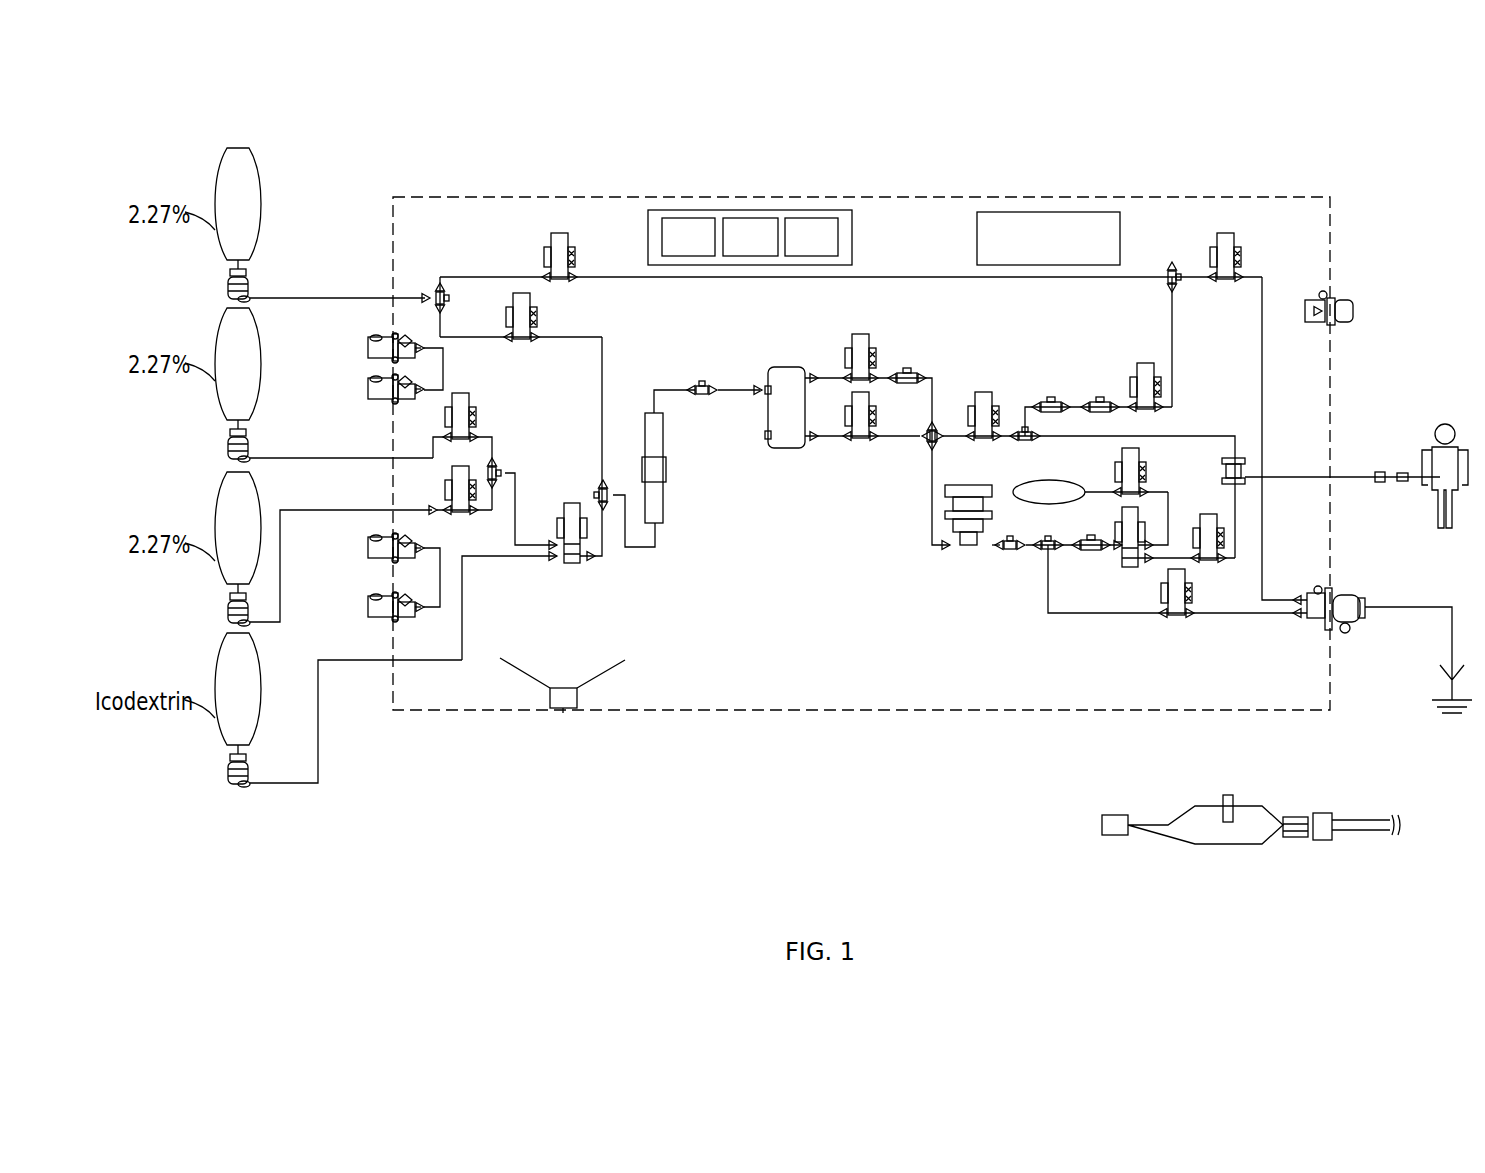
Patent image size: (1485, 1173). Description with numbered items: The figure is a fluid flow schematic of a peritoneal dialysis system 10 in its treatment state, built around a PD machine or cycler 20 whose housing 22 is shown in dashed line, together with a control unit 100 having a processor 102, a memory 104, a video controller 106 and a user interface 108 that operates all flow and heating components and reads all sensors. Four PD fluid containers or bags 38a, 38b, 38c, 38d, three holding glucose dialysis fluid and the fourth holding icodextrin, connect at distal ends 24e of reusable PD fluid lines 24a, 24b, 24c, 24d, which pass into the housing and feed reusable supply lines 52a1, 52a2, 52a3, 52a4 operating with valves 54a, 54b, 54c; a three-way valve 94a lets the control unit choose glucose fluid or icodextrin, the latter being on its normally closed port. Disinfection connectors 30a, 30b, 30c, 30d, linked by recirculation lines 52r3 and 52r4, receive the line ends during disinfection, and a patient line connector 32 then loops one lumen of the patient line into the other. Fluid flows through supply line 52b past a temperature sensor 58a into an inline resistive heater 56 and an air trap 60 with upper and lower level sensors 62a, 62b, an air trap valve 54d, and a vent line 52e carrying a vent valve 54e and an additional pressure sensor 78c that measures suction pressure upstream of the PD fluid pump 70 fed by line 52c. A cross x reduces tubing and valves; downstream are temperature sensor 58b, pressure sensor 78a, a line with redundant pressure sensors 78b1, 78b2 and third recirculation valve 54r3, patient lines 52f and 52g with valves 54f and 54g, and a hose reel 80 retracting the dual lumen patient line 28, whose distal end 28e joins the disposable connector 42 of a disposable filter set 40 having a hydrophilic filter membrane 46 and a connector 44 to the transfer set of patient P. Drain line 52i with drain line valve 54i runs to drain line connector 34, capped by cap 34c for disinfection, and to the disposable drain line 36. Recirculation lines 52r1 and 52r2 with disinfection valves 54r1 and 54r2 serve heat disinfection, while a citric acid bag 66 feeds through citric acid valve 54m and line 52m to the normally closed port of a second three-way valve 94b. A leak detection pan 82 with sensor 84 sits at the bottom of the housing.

The peritoneal dialysis system 10 is at (932, 175).
The PD machine or cycler 20 is at (1348, 185).
The housing 22 is at (1330, 270).
The reusable PD fluid line 24a is at (338, 298).
The reusable PD fluid line 24b is at (382, 458).
The reusable PD fluid line 24c is at (280, 580).
The reusable PD fluid line 24d is at (318, 760).
The distal end 24e is at (250, 283).
The dual lumen patient line 28 is at (1345, 475).
The distal end of dual lumen patient line 28e is at (1383, 485).
The disinfection or PD fluid line connector 30a is at (366, 348).
The disinfection or PD fluid line connector 30b is at (366, 390).
The disinfection or PD fluid line connector 30c is at (366, 548).
The disinfection or PD fluid line connector 30d is at (366, 608).
The patient line connector 32 is at (1300, 295).
The drain line connector 34 is at (1310, 625).
The cap 34c is at (1345, 635).
The disposable drain line 36 is at (1430, 615).
The PD fluid container or bag 38a is at (262, 163).
The PD fluid container or bag 38b is at (262, 325).
The PD fluid container or bag 38c is at (262, 490).
The fourth PD fluid container or bag 38d is at (262, 650).
The disposable filter set 40 is at (1398, 473).
The disposable connector 42 is at (1297, 813).
The connector 44 is at (1115, 813).
The hydrophilic filter membrane 46 is at (1228, 793).
The reusable supply line 52a1 is at (485, 332).
The reusable supply line 52a2 is at (492, 445).
The reusable supply line 52a3 is at (505, 480).
The reusable supply line 52a4 is at (462, 575).
The reusable supply line 52b is at (663, 390).
The reusable PD fluid line 52c is at (930, 540).
The vent line 52e is at (825, 375).
The reusable patient line 52f is at (1262, 535).
The reusable patient line 52g is at (1190, 435).
The reusable drain line 52i is at (1060, 618).
The citric acid line 52m is at (1168, 470).
The recirculation disinfection line 52r1 is at (690, 280).
The recirculation disinfection line 52r2 is at (1262, 325).
The third recirculation or disinfection line 52r3 is at (443, 372).
The fourth recirculation or disinfection line 52r4 is at (440, 590).
The valve 54a is at (531, 305).
The valve 54b is at (470, 395).
The valve 54c is at (440, 470).
The air trap valve 54d is at (875, 410).
The vent valve 54e is at (870, 340).
The valve 54f is at (1213, 565).
The valve 54g is at (990, 392).
The drain line valve 54i is at (1176, 618).
The citric acid valve 54m is at (1118, 470).
The disinfection valve 54r1 is at (559, 232).
The disinfection valve 54r2 is at (1225, 232).
The third recirculation valve 54r3 is at (1148, 362).
The inline resistive heater 56 is at (663, 500).
The temperature sensor 58a is at (698, 400).
The temperature sensor 58b is at (1005, 555).
The air trap 60 is at (790, 450).
The upper level sensor 62a is at (765, 385).
The lower level sensor 62b is at (768, 445).
The citric acid container or bag 66 is at (1030, 482).
The PD fluid pump 70 is at (965, 550).
The pressure sensor 78a is at (1085, 555).
The pressure sensor 78b1 is at (1057, 395).
The pressure sensor 78b2 is at (1105, 395).
The additional pressure sensor 78c is at (915, 365).
The hose reel 80 is at (1247, 470).
The leak detection pan 82 is at (570, 660).
The leak detection sensor 84 is at (563, 713).
The three-way valve 94a is at (575, 568).
The second three-way valve 94b is at (1128, 568).
The control unit 100 is at (852, 235).
The processor 102 is at (688, 237).
The memory 104 is at (750, 237).
The video controller 106 is at (811, 237).
The user interface 108 is at (1048, 238).
The patient P is at (1447, 422).
The cross x is at (925, 445).